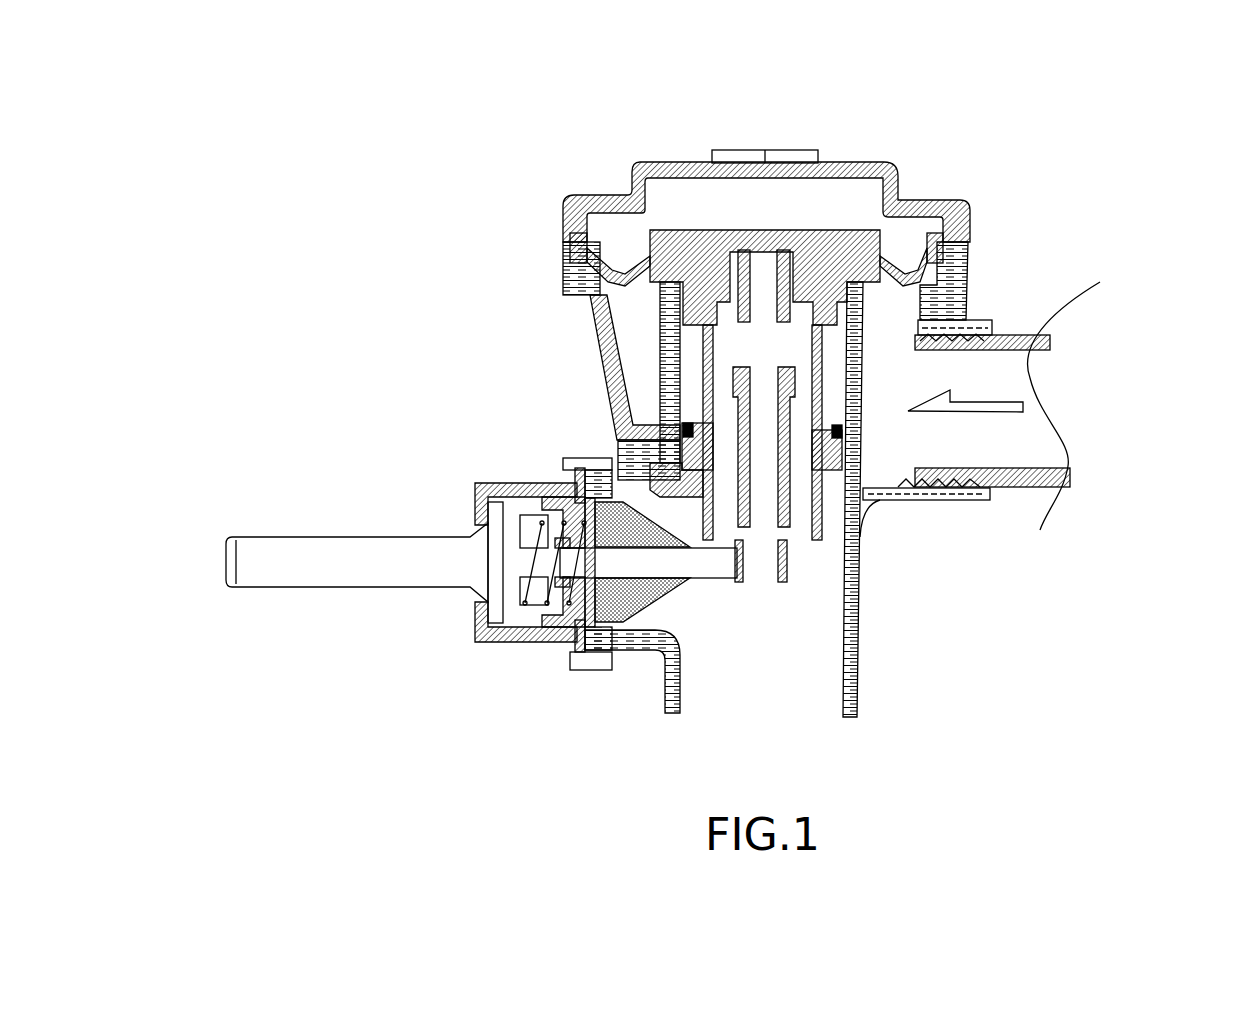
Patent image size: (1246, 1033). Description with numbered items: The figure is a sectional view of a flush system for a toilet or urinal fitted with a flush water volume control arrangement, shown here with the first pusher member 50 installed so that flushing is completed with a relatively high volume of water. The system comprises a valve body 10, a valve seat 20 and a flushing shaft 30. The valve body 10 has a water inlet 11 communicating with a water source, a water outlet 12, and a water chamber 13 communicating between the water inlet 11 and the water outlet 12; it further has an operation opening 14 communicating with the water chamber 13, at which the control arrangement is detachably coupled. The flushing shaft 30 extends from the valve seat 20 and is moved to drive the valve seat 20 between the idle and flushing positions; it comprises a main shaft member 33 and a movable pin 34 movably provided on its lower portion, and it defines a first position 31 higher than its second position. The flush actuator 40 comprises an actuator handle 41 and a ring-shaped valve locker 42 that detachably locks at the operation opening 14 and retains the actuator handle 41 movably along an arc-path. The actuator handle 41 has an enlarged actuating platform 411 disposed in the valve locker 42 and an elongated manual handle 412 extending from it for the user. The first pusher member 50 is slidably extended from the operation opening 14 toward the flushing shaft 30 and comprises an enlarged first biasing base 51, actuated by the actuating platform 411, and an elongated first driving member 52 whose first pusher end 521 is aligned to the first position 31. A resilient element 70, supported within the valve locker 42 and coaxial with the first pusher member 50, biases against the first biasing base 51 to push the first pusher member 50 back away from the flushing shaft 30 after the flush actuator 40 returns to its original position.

The valve body 10 is at (520, 178).
The water inlet 11 is at (1007, 366).
The water outlet 12 is at (813, 647).
The water chamber 13 is at (856, 204).
The operation opening 14 is at (695, 562).
The valve seat 20 is at (703, 238).
The flushing shaft 30 is at (1000, 668).
The first position 31 is at (750, 553).
The main shaft member 33 is at (764, 277).
The movable pin 34 is at (795, 530).
The flush actuator 40 is at (193, 287).
The actuator handle 41 is at (217, 435).
The actuating platform 411 is at (497, 560).
The manual handle 412 is at (337, 563).
The valve locker 42 is at (547, 640).
The first pusher member 50 is at (622, 563).
The first biasing base 51 is at (522, 545).
The first driving member 52 is at (728, 563).
The first pusher end 521 is at (668, 612).
The resilient element 70 is at (535, 615).